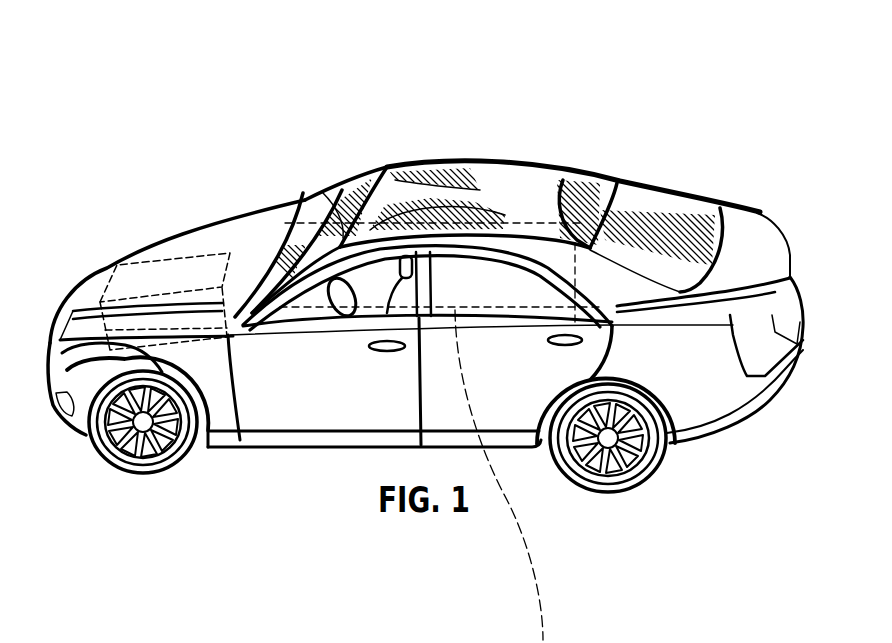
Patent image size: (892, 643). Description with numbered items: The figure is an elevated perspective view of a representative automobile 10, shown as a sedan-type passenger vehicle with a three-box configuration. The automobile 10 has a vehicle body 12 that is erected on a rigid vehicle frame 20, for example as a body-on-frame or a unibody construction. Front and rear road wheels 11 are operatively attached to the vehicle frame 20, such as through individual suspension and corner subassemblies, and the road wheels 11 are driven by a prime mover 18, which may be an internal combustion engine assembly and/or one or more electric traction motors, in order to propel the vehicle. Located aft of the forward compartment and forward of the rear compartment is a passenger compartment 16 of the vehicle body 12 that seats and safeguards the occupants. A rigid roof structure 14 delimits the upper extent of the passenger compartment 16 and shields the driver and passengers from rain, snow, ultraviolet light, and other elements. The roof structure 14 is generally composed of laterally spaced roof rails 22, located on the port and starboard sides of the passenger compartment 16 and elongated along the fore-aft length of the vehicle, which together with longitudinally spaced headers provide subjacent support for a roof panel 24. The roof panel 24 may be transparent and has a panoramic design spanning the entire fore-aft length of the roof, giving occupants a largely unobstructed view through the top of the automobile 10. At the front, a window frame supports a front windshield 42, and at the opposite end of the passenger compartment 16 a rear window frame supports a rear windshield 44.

The automobile 10 is at (132, 88).
The road wheels 11 is at (124, 467).
The vehicle body 12 is at (138, 236).
The roof structure 14 is at (388, 167).
The passenger compartment 16 is at (304, 198).
The prime mover 18 is at (107, 292).
The vehicle frame 20 is at (275, 226).
The roof rails 22 is at (517, 177).
The roof panel 24 is at (527, 160).
The front windshield 42 is at (355, 197).
The rear windshield 44 is at (655, 200).